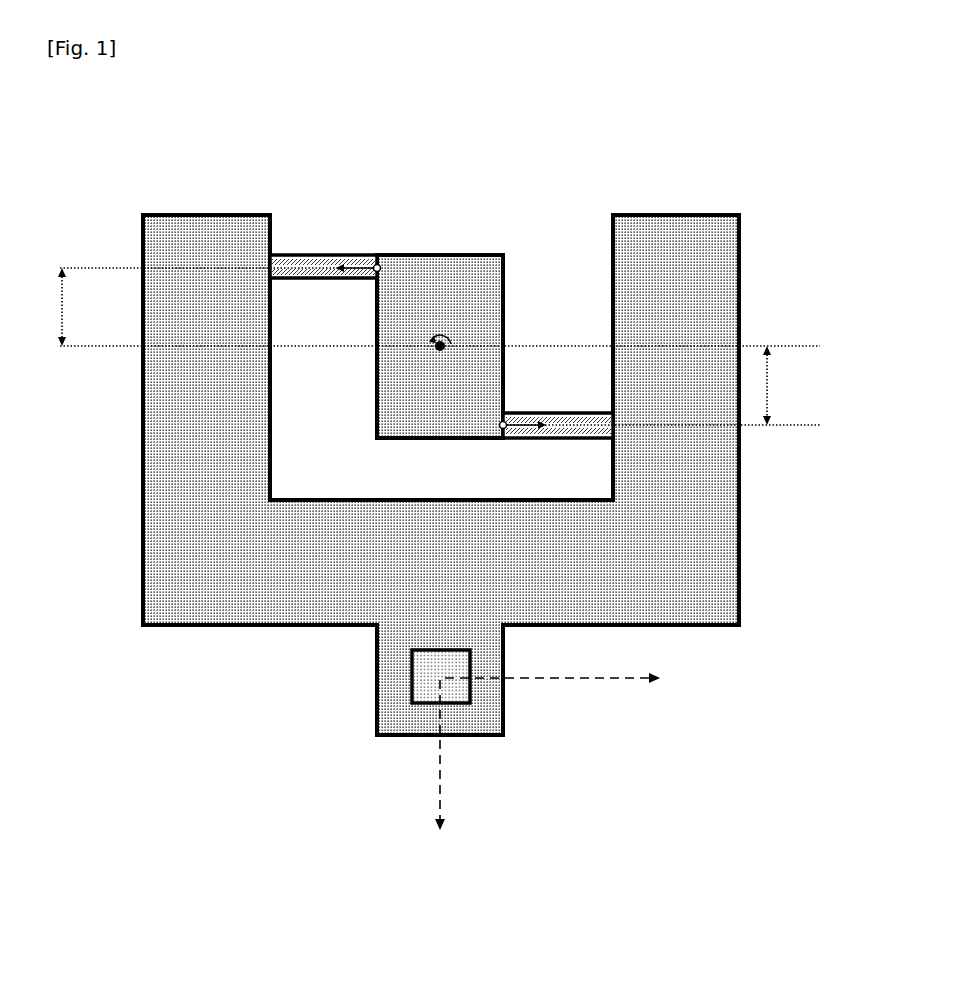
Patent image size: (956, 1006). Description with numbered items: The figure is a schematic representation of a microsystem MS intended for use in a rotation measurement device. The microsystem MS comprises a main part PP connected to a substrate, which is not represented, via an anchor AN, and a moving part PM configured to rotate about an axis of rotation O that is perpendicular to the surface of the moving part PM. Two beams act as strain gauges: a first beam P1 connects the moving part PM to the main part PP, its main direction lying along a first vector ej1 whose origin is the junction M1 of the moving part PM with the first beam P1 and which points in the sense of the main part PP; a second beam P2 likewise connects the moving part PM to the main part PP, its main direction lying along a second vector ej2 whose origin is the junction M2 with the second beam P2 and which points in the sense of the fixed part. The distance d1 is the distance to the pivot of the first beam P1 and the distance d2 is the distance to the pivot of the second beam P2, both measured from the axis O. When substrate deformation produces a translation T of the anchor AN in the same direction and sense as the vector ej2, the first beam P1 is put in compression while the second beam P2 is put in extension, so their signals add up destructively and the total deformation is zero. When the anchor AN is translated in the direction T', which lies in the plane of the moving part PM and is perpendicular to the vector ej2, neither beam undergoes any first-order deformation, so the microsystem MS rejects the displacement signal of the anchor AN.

The microsystem MS is at (592, 121).
The main part PP is at (217, 231).
The moving part PM is at (472, 254).
The first beam P1 is at (337, 254).
The second beam P2 is at (590, 412).
The junction of the moving part with the first beam M1 is at (380, 248).
The junction of the main part with the second beam M2 is at (501, 446).
The first vector ej1 is at (354, 288).
The second vector ej2 is at (526, 407).
The axis of rotation O is at (440, 327).
The distance to the pivot of the first beam d1 is at (439, 307).
The distance to the pivot of the second beam d2 is at (661, 385).
The translation T is at (552, 692).
The direction T' is at (418, 757).
The anchor AN is at (446, 690).